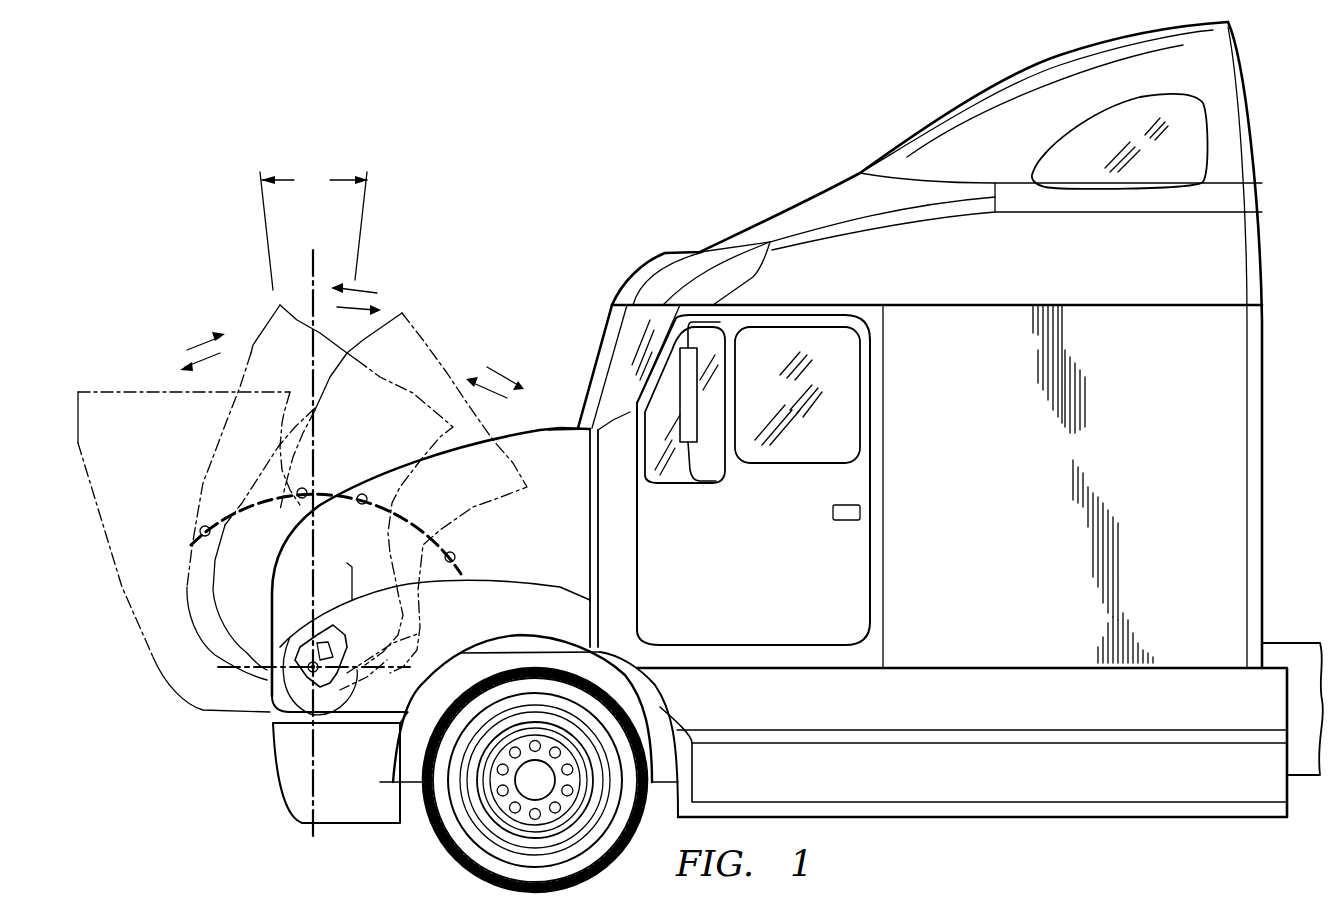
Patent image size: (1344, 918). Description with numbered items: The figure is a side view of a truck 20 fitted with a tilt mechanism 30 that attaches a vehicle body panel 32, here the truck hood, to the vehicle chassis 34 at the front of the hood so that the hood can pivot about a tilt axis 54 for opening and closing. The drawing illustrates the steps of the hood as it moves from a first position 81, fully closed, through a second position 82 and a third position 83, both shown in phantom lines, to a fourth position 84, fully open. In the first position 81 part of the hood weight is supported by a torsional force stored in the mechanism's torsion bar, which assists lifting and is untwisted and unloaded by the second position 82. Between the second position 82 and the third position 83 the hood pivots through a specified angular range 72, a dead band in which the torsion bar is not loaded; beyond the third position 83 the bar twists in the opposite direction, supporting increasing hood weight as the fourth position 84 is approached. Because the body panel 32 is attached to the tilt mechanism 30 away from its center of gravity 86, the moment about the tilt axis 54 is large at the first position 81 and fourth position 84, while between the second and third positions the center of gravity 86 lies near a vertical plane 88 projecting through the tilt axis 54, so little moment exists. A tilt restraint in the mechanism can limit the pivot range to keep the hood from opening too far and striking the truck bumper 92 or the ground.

The truck 20 is at (680, 203).
The tilt mechanism 30 is at (345, 630).
The vehicle body panel 32 is at (570, 540).
The vehicle chassis 34 is at (408, 785).
The tilt axis 54 is at (290, 645).
The specified angular range 72 is at (314, 225).
The first position 81 is at (550, 427).
The second position 82 is at (407, 313).
The third position 83 is at (278, 307).
The fourth position 84 is at (148, 390).
The center of gravity 86 is at (203, 529).
The vertical plane 88 is at (310, 268).
The truck bumper 92 is at (368, 787).